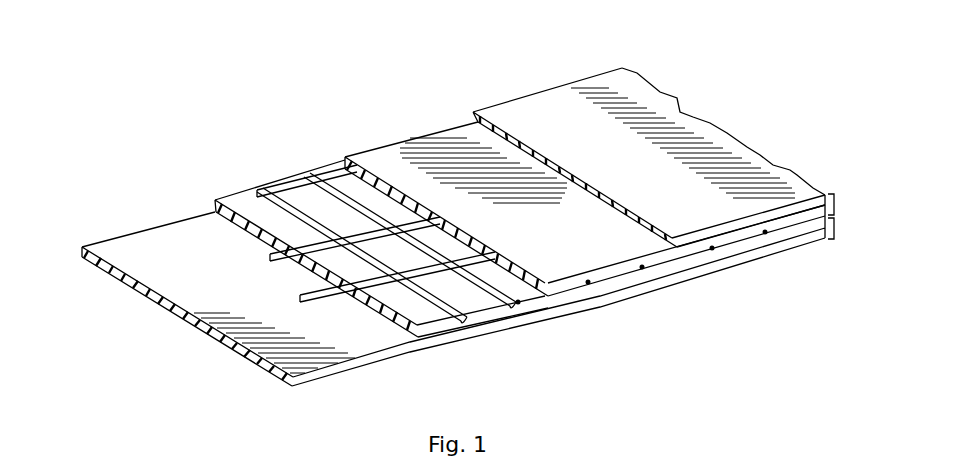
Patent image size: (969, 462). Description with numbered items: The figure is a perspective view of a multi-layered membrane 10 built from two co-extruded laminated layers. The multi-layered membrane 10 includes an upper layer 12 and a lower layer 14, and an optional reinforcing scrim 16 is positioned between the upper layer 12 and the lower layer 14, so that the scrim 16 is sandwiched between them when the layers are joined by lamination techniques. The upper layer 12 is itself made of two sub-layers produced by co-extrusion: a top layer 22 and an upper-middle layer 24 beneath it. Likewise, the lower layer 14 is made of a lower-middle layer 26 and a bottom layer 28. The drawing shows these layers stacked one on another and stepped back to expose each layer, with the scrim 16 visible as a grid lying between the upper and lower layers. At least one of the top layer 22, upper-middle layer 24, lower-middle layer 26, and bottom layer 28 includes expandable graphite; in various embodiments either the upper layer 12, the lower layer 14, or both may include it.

The multi-layered membrane 10 is at (763, 115).
The upper layer 12 is at (836, 204).
The lower layer 14 is at (836, 228).
The reinforcing scrim 16 is at (292, 178).
The top layer 22 is at (523, 110).
The upper-middle layer 24 is at (407, 145).
The lower-middle layer 26 is at (263, 215).
The bottom layer 28 is at (160, 253).